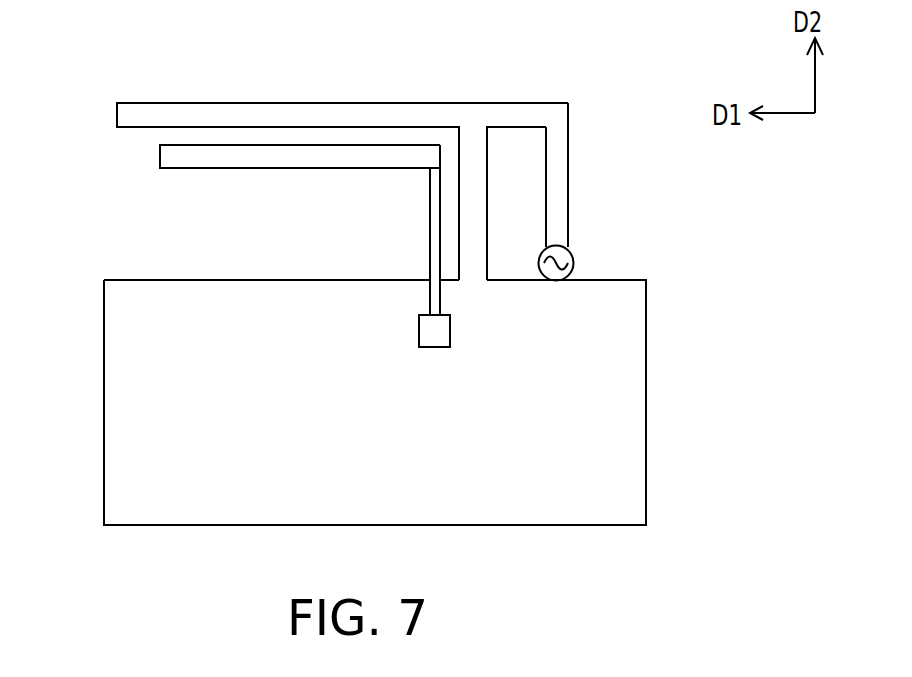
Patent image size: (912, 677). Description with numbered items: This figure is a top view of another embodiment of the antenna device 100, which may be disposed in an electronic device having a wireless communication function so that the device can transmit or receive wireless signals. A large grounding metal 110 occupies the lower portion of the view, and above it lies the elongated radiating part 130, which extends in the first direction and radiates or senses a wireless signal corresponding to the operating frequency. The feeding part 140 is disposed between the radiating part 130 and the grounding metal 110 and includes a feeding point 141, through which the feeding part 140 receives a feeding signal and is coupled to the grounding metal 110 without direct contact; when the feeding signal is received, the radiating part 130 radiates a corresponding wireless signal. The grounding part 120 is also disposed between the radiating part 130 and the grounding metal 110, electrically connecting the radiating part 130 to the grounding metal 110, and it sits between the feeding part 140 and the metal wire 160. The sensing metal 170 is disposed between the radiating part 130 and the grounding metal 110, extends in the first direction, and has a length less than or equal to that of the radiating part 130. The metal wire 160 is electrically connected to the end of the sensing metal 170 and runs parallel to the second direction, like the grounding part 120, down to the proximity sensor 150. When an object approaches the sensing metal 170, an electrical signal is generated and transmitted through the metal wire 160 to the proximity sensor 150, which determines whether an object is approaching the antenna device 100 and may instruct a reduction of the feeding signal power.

The antenna device 100 is at (766, 566).
The grounding metal 110 is at (633, 327).
The grounding part 120 is at (482, 175).
The radiating part 130 is at (125, 116).
The feeding part 140 is at (558, 182).
The feeding point 141 is at (569, 248).
The proximity sensor 150 is at (435, 331).
The metal wire 160 is at (435, 223).
The sensing metal 170 is at (252, 158).